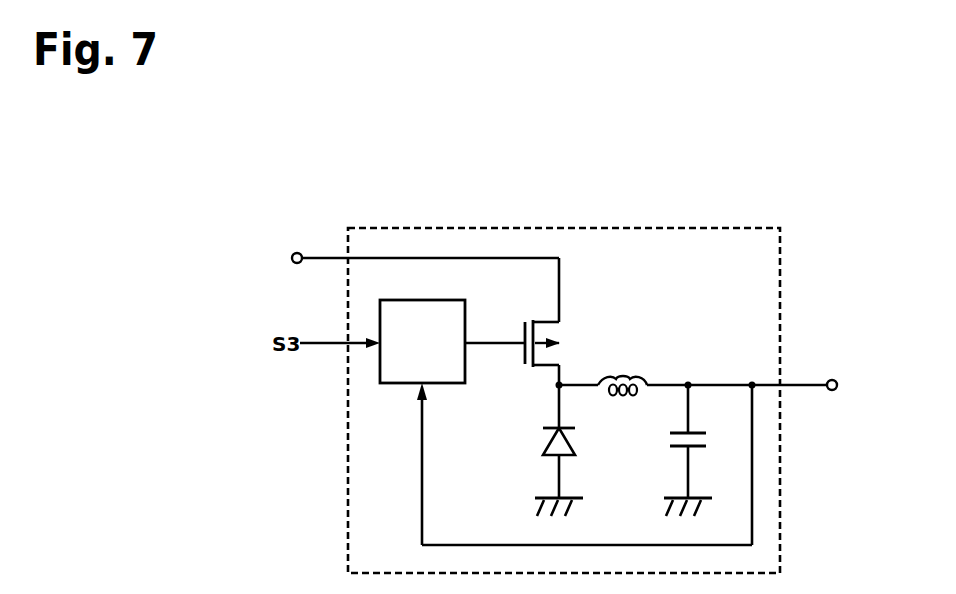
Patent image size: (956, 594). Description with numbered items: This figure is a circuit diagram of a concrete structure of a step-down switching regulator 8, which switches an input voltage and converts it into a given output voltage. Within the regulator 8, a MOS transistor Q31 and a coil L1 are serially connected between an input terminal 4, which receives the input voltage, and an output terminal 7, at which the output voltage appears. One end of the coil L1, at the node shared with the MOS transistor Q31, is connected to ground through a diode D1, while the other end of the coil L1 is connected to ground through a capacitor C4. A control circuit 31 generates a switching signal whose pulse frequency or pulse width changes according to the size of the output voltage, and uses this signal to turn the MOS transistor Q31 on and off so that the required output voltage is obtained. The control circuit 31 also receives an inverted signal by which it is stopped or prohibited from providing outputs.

The input terminal 4 is at (297, 252).
The output terminal 7 is at (832, 379).
The step-down switching regulator 8 is at (713, 228).
The control circuit 31 is at (437, 300).
The MOS transistor Q31 is at (540, 321).
The diode D1 is at (572, 450).
The coil L1 is at (622, 374).
The capacitor C4 is at (701, 450).